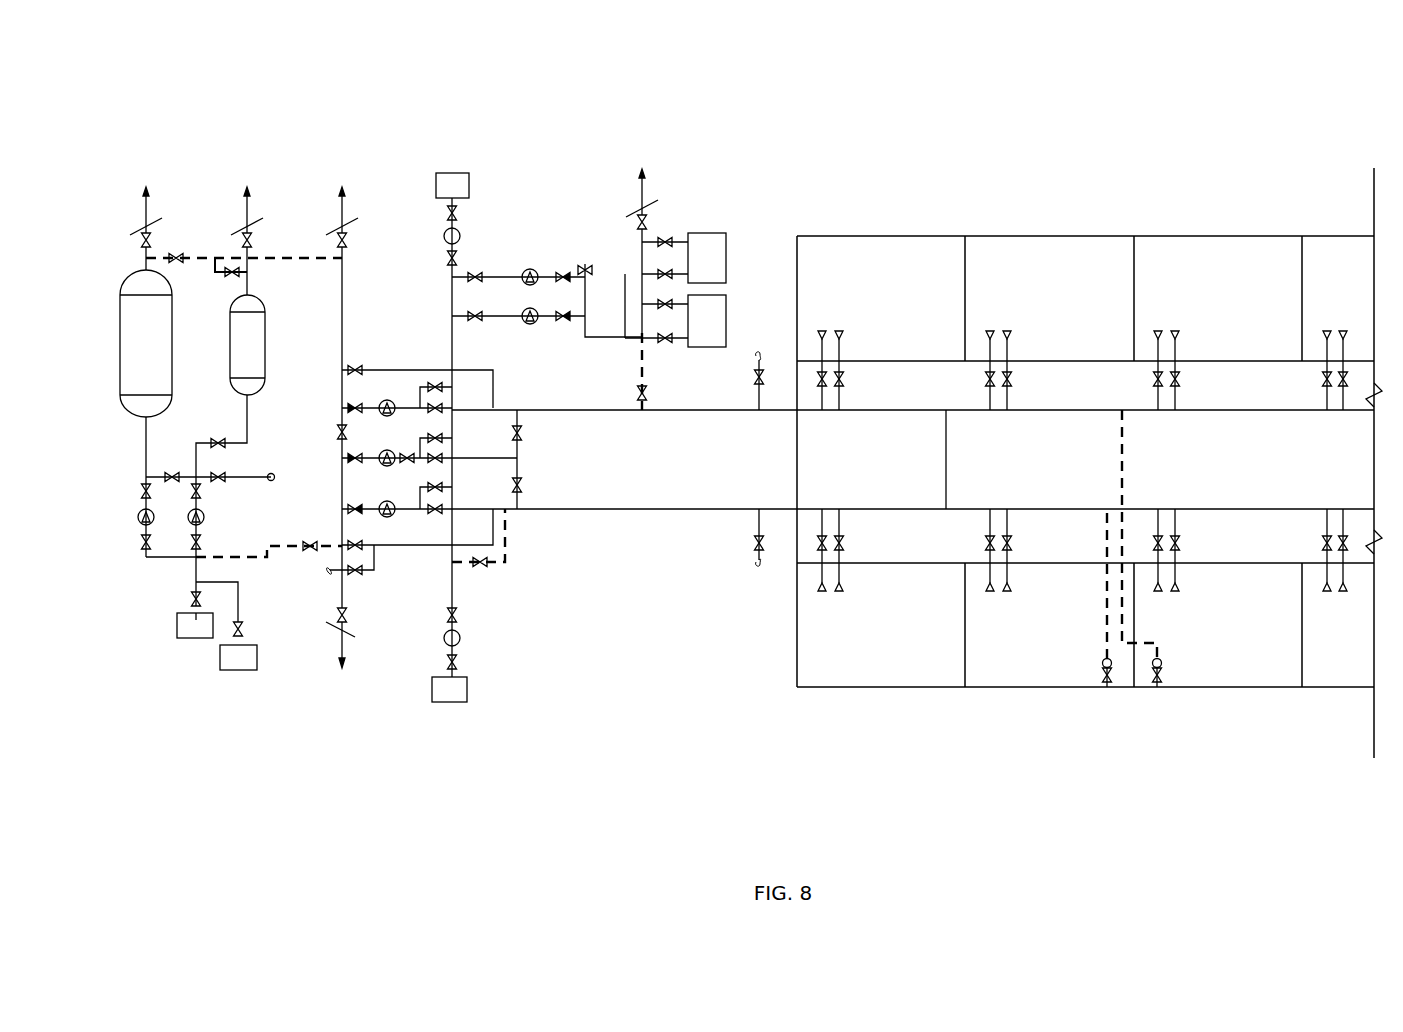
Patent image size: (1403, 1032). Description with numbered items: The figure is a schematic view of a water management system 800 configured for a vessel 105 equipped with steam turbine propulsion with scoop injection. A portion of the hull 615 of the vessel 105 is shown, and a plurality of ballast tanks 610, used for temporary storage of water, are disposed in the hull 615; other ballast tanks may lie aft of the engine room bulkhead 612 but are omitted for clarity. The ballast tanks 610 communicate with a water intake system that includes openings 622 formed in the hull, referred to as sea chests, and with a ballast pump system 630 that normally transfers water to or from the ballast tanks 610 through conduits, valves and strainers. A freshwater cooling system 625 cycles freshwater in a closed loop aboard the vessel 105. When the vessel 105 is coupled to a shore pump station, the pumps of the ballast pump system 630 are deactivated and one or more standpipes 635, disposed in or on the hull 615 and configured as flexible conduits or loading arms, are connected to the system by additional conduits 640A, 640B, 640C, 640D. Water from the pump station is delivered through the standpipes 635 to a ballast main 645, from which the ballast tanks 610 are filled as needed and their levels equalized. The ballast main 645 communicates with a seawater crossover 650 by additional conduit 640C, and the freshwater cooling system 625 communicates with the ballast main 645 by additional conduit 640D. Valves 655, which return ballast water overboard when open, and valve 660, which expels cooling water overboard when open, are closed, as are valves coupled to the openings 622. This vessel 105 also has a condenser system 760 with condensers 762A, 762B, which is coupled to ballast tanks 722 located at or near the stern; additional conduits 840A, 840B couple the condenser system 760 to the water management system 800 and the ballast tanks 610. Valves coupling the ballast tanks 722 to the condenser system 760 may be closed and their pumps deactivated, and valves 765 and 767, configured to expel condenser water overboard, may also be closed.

The vessel 105 is at (917, 414).
The ballast tanks 610 is at (1085, 461).
The engine room bulkhead 612 is at (797, 252).
The hull 615 is at (1065, 460).
The openings 622 is at (469, 188).
The freshwater cooling system 625 is at (675, 260).
The ballast pump system 630 is at (555, 461).
The standpipes 635 is at (1157, 688).
The additional conduit 640A is at (1105, 540).
The additional conduit 640B is at (1122, 475).
The additional conduit 640C is at (508, 543).
The additional conduit 640D is at (640, 366).
The ballast main 645 is at (885, 412).
The seawater crossover 650 is at (452, 336).
The valves 655 is at (344, 236).
The valve 660 is at (645, 222).
The ballast tanks 722 is at (195, 638).
The condenser system 760 is at (162, 379).
The condenser 762A is at (120, 342).
The condenser 762B is at (230, 382).
The valve 765 is at (148, 238).
The valve 767 is at (250, 238).
The water management system 800 is at (610, 612).
The additional conduit 840A is at (268, 562).
The additional conduit 840B is at (296, 258).